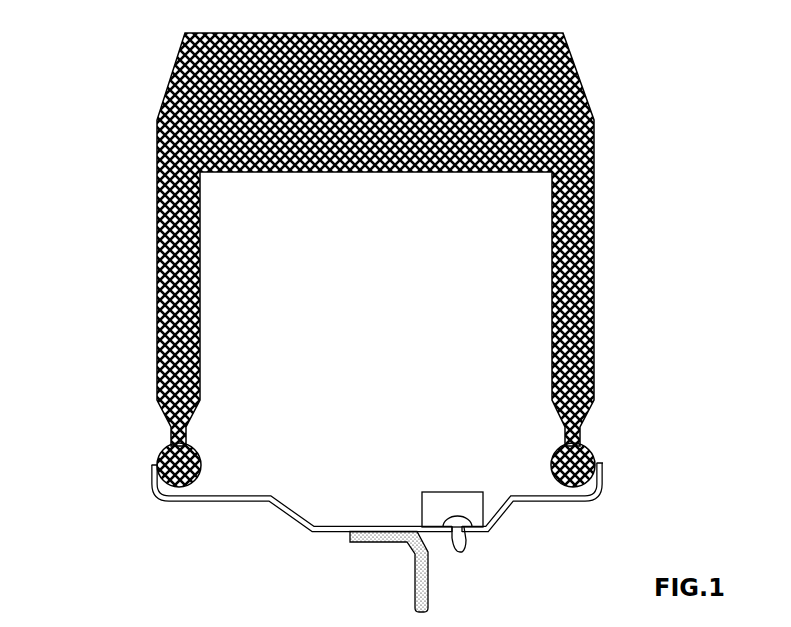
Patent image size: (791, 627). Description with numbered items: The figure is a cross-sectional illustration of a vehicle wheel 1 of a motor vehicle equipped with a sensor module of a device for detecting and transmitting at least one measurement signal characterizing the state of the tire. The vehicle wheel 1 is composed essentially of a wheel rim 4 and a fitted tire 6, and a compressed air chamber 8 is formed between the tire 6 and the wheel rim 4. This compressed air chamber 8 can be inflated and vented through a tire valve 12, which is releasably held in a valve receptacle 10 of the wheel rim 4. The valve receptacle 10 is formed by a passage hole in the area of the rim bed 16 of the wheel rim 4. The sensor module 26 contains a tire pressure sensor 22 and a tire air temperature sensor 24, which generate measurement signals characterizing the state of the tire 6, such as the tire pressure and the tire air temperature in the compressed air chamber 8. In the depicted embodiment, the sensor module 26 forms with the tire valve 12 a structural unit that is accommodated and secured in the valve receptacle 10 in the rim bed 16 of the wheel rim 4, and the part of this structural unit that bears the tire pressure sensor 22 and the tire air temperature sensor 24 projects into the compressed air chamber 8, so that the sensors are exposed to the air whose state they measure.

The vehicle wheel 1 is at (96, 102).
The wheel rim 4 is at (182, 500).
The tire 6 is at (164, 167).
The compressed air chamber 8 is at (230, 262).
The valve receptacle 10 is at (475, 541).
The tire valve 12 is at (455, 553).
The rim bed 16 is at (326, 534).
The tire pressure sensor 22 is at (431, 497).
The tire air temperature sensor 24 is at (428, 512).
The sensor module 26 is at (467, 474).